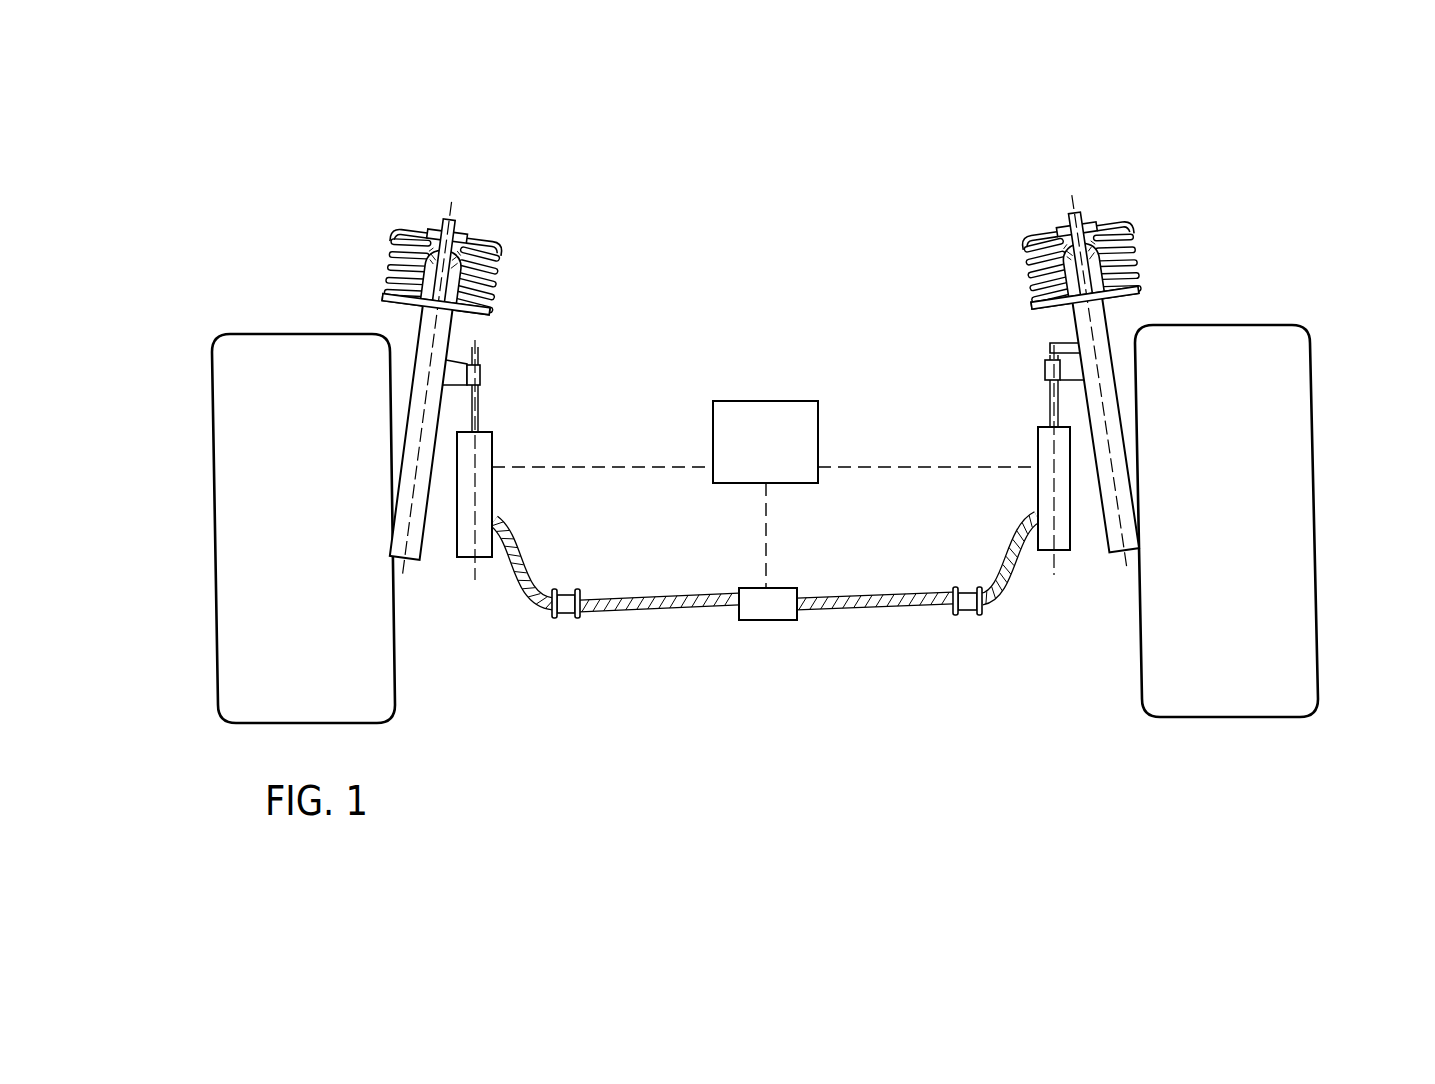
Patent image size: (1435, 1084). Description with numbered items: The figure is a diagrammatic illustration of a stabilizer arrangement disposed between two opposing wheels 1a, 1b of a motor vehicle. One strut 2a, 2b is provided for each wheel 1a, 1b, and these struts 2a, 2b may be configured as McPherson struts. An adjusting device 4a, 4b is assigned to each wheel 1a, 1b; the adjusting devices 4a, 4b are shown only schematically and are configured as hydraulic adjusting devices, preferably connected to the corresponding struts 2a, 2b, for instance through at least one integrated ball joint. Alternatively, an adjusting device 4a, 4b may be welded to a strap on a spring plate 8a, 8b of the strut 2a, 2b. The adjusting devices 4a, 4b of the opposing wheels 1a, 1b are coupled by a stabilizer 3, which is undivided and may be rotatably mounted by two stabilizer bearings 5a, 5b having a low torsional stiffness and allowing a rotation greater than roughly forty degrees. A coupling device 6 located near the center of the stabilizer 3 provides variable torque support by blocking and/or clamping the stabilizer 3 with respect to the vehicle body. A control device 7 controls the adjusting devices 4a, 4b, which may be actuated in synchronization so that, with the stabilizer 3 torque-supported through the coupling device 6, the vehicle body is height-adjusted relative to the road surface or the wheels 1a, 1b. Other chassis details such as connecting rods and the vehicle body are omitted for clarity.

The wheel 1a is at (261, 502).
The wheel 1b is at (1268, 495).
The strut 2a is at (426, 354).
The strut 2b is at (1100, 349).
The stabilizer 3 is at (653, 611).
The adjusting device 4a is at (484, 447).
The adjusting device 4b is at (1043, 442).
The stabilizer bearing 5a is at (566, 608).
The stabilizer bearing 5b is at (968, 604).
The coupling device 6 is at (767, 607).
The control device 7 is at (774, 421).
The spring plate 8a is at (488, 323).
The spring plate 8b is at (1036, 318).